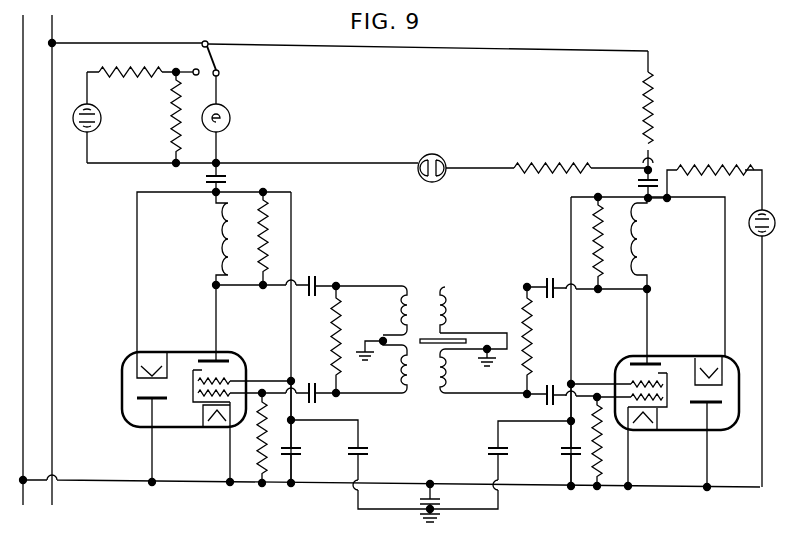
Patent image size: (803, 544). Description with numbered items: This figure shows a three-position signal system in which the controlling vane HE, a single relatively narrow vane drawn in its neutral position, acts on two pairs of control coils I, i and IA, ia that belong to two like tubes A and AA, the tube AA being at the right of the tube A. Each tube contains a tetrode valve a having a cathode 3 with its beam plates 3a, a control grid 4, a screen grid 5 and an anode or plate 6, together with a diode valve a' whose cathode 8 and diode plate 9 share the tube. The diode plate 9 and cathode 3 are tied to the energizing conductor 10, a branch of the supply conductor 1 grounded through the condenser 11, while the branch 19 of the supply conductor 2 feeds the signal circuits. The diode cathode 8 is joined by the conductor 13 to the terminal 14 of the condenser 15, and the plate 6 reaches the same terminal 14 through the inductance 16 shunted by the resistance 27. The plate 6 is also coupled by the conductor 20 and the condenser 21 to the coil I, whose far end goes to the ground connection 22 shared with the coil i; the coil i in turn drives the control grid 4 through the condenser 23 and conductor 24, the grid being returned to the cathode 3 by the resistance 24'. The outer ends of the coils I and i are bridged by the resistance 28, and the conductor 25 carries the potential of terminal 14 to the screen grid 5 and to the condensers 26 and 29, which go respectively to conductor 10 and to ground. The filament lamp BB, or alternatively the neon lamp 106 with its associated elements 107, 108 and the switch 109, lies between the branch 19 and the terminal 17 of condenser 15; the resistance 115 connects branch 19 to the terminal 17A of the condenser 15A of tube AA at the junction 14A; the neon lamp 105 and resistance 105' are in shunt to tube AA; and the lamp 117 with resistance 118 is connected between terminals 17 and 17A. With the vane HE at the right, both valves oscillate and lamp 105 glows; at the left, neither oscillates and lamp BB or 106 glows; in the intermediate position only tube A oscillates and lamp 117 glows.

The supply conductor 1 is at (23, 218).
The supply conductor 2 is at (53, 218).
The conductor 19 is at (318, 46).
The resistor 107 is at (140, 68).
The neon type lamp 106 is at (97, 108).
The resistor 108 is at (169, 122).
The switch 109 is at (212, 58).
The filament lamp BB is at (232, 118).
The terminal of condenser 17 is at (206, 177).
The condenser 15 is at (228, 181).
The terminal of condenser 14 is at (203, 194).
The inductance 16 is at (214, 240).
The resistance 27 is at (257, 250).
The conductor 25 is at (292, 236).
The conductor 13 is at (137, 288).
The condenser 21 is at (313, 275).
The conductor 20 is at (247, 287).
The tube A is at (183, 351).
The tube AA is at (672, 356).
The cathode of the diode valve 8 is at (166, 352).
The diode plate 9 is at (134, 405).
The diode valve a' is at (422, 366).
The anode or plate 6 is at (220, 357).
The beam plates 3a is at (230, 373).
The screen grid 5 is at (232, 380).
The tetrode valve a is at (430, 385).
The control grid 4 is at (232, 406).
The cathode 3 is at (203, 426).
The resistance 24' is at (428, 440).
The condenser 26 is at (301, 452).
The condenser 29 is at (368, 452).
The energizing conductor 10 is at (327, 488).
The condenser 11 is at (418, 502).
The resistance 28 is at (333, 341).
The ground connection 22 is at (380, 338).
The inductance or control coil I is at (394, 308).
The second inductance or control coil i is at (395, 373).
The control coil IA is at (446, 312).
The control coil ia is at (448, 373).
The conductor 24 is at (412, 356).
The vane HE is at (427, 336).
The condenser 23 is at (318, 400).
The signal lamp 117 is at (421, 158).
The resistance 118 is at (534, 164).
The resistance 115 is at (640, 105).
The terminal of condenser 17A is at (651, 178).
The condenser 15A is at (637, 184).
The junction point 14A is at (651, 196).
The resistance 105' is at (698, 156).
The neon tube lamp 105 is at (751, 243).